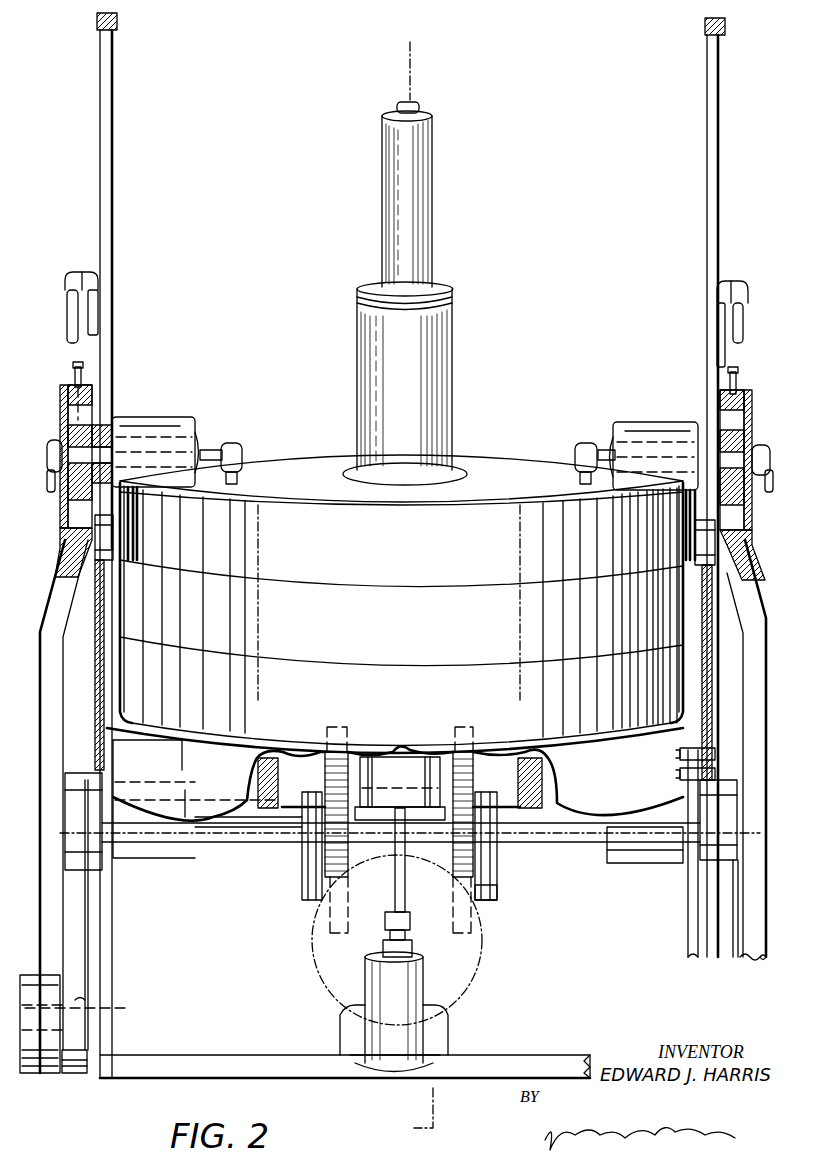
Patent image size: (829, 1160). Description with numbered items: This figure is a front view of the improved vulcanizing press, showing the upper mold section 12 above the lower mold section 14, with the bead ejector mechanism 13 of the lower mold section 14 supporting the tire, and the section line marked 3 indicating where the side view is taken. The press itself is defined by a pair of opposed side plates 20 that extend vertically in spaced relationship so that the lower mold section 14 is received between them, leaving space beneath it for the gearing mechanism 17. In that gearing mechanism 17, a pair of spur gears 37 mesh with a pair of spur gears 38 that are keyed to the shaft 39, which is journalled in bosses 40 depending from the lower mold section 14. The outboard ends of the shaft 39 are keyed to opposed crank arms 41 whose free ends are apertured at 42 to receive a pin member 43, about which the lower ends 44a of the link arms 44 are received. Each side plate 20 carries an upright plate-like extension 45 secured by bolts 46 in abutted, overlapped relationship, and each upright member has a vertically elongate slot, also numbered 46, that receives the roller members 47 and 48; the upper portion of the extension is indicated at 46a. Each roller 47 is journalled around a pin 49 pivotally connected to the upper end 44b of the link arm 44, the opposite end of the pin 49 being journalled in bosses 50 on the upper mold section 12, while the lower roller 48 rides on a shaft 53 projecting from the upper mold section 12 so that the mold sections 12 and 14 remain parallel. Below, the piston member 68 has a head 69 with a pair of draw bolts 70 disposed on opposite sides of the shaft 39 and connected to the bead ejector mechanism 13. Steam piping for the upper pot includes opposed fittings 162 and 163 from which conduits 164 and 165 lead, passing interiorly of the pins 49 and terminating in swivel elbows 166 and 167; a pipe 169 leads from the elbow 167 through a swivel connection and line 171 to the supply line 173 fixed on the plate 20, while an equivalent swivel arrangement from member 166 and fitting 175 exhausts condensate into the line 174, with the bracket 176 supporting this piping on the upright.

The section line 3- 3 is at (378, 40).
The upper mold section 12 is at (500, 452).
The bead ejector mechanism 13 is at (365, 984).
The lower mold section 14 is at (225, 820).
The gearing mechanism 17 is at (491, 900).
The side plate 20 is at (108, 938).
The spur gear 37 is at (305, 878).
The spur gear 38 is at (325, 773).
The shaft 39 is at (250, 840).
The boss 40 is at (265, 806).
The crank arm 41 is at (75, 970).
The aperture 42 is at (128, 1010).
The pin member 43 is at (77, 1073).
The link arm 44 is at (42, 912).
The end of link arm 44a is at (28, 1073).
The upper end of link arm 44b is at (66, 385).
The upright plate-like extension 45 is at (112, 202).
The bolt 46 is at (715, 754).
The rod portion 46a is at (112, 122).
The roller member 47 is at (106, 418).
The roller member 48 is at (100, 560).
The pin 49 is at (162, 440).
The boss 50 is at (197, 425).
The shaft 53 is at (98, 580).
The piston member 68 is at (430, 985).
The head 69 is at (410, 920).
The draw bolt 70 is at (395, 903).
The fitting 162 is at (240, 450).
The fitting 163 is at (582, 446).
The conduit 164 is at (215, 450).
The conduit 165 is at (600, 448).
The swivel type elbow 166 is at (50, 442).
The swivel type elbow 167 is at (760, 446).
The pipe 169 is at (47, 476).
The line 171 is at (70, 320).
The supply line 173 is at (92, 303).
The line 174 is at (778, 480).
The fitting 175 is at (738, 290).
The bracket 176 is at (718, 325).